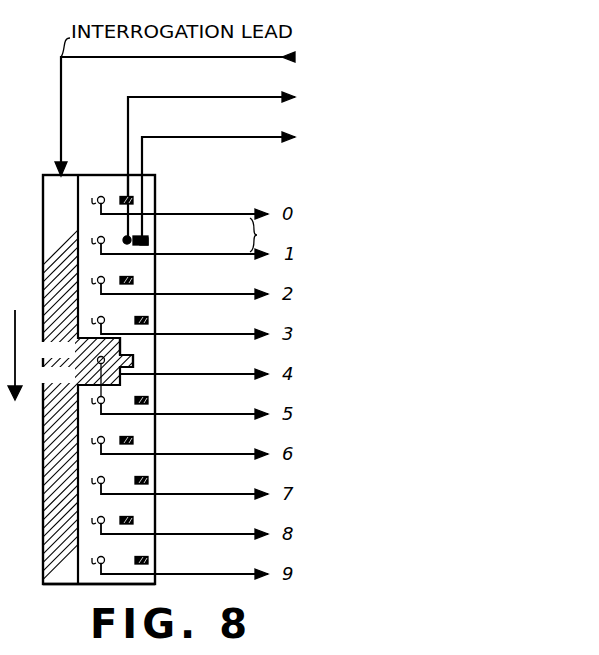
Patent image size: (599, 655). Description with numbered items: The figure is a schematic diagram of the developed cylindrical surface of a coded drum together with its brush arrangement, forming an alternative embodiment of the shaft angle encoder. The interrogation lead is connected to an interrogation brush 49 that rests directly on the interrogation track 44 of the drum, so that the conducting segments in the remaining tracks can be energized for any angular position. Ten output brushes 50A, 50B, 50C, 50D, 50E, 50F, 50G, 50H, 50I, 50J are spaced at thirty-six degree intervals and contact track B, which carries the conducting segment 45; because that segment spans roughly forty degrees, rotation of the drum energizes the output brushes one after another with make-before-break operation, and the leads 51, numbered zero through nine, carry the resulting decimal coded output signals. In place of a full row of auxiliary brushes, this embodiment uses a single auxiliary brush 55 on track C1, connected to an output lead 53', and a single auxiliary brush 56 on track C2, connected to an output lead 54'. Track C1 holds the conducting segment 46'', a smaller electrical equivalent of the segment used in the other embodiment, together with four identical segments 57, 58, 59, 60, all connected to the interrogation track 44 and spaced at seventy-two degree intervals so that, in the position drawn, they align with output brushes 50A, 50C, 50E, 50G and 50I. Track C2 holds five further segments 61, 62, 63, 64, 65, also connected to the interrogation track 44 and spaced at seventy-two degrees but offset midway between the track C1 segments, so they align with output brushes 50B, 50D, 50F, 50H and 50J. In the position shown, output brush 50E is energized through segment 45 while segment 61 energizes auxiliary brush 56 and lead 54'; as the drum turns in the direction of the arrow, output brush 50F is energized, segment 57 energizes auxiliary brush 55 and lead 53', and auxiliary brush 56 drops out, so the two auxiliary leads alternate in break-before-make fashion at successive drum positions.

The interrogation track 44 is at (61, 584).
The interrogation brush 49 is at (59, 170).
The conducting segment 57 is at (128, 176).
The output lead 53' is at (211, 133).
The output lead 54' is at (218, 172).
The output brush 50A is at (174, 199).
The output brush 50B is at (174, 239).
The output brush 50C is at (174, 279).
The output brush 50D is at (174, 319).
The output brush 50E is at (97, 359).
The output brush 50F is at (101, 387).
The output brush 50G is at (174, 439).
The output brush 50H is at (174, 479).
The output brush 50I is at (174, 519).
The output brush 50J is at (174, 559).
The auxiliary brush 55 is at (133, 200).
The conducting segment 61 is at (148, 237).
The auxiliary brush 56 is at (148, 246).
The leads 51 is at (246, 235).
The conducting segment 58 is at (133, 280).
The conducting segment 62 is at (148, 320).
The conducting segment 45 is at (118, 348).
The conducting segment 46'' is at (165, 362).
The conducting segment 63 is at (148, 400).
The conducting segment 59 is at (133, 440).
The conducting segment 64 is at (148, 480).
The conducting segment 60 is at (133, 520).
The conducting segment 65 is at (148, 560).